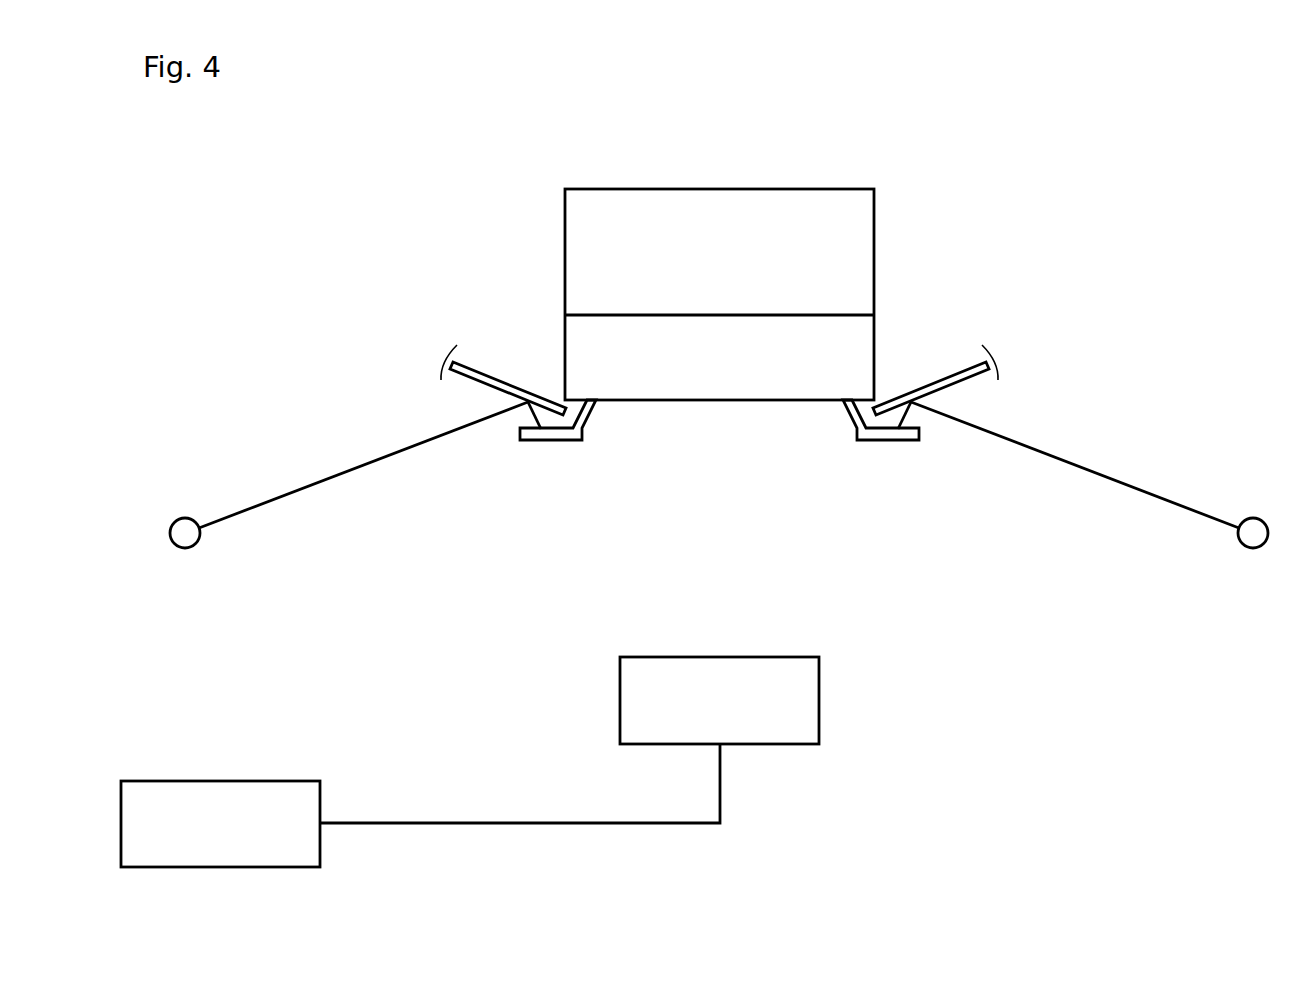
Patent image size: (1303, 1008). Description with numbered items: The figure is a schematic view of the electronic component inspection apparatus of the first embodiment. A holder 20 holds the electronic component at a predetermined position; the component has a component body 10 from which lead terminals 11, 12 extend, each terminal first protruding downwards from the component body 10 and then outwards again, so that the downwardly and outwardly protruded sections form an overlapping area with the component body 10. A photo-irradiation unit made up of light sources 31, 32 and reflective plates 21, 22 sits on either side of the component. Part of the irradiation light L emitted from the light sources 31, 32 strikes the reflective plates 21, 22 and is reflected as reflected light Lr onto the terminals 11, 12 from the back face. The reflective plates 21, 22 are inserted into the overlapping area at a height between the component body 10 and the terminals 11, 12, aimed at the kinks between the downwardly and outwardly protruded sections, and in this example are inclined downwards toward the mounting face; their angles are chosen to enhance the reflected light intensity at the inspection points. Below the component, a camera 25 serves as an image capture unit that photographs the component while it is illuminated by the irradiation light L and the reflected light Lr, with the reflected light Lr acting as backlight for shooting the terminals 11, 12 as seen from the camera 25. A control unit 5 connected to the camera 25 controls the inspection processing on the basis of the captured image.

The control unit 5 is at (120, 820).
The component body 10 is at (875, 338).
The terminal 11 is at (558, 441).
The terminal 12 is at (880, 441).
The holder 20 is at (722, 189).
The reflective plate 21 is at (492, 372).
The reflective plate 22 is at (949, 370).
The camera 25 is at (620, 697).
The light source 31 is at (182, 518).
The light source 32 is at (1257, 518).
The irradiation light L is at (290, 497).
The reflected light Lr is at (528, 413).